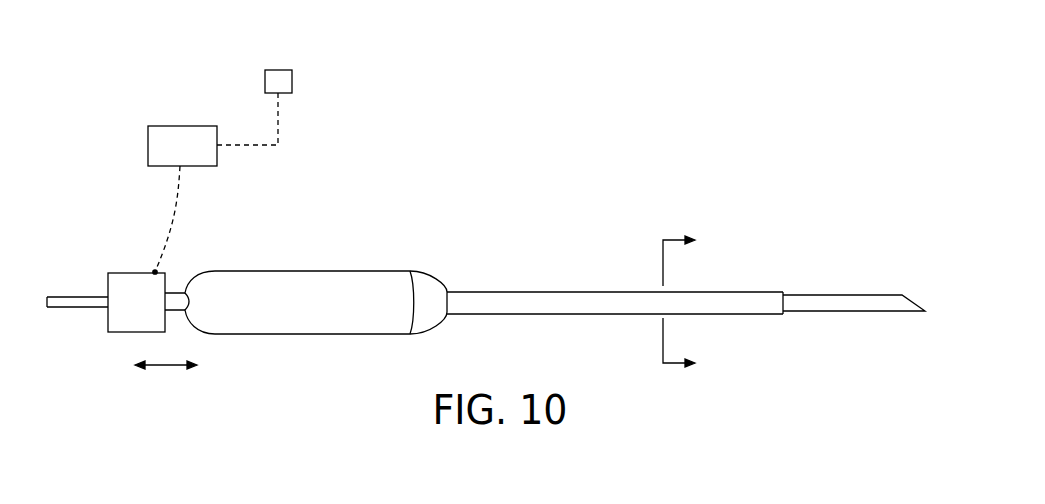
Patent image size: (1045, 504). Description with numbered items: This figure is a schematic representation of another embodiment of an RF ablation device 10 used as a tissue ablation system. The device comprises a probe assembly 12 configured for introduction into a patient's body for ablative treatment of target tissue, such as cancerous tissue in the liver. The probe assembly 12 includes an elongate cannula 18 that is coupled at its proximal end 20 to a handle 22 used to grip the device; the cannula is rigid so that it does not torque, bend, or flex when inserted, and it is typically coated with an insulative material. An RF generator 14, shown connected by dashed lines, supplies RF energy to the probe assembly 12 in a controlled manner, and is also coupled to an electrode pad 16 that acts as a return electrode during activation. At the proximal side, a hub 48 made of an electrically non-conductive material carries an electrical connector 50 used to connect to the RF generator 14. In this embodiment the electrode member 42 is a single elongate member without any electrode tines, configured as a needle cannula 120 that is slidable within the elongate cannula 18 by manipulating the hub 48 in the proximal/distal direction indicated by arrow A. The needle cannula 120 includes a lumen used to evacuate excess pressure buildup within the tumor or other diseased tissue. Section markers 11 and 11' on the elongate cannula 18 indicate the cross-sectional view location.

The RF ablation device 10 is at (594, 152).
The probe assembly 12 is at (258, 335).
The RF generator 14 is at (183, 126).
The electrode pad 16 is at (278, 70).
The elongate cannula 18 is at (550, 298).
The proximal end 20 is at (450, 277).
The handle 22 is at (308, 271).
The electrode member 42 is at (812, 303).
The hub 48 is at (112, 273).
The electrical connector 50 is at (153, 272).
The section line 11 is at (678, 358).
The section line 11' is at (678, 246).
The needle cannula 120 is at (851, 325).
The arrow A is at (166, 382).